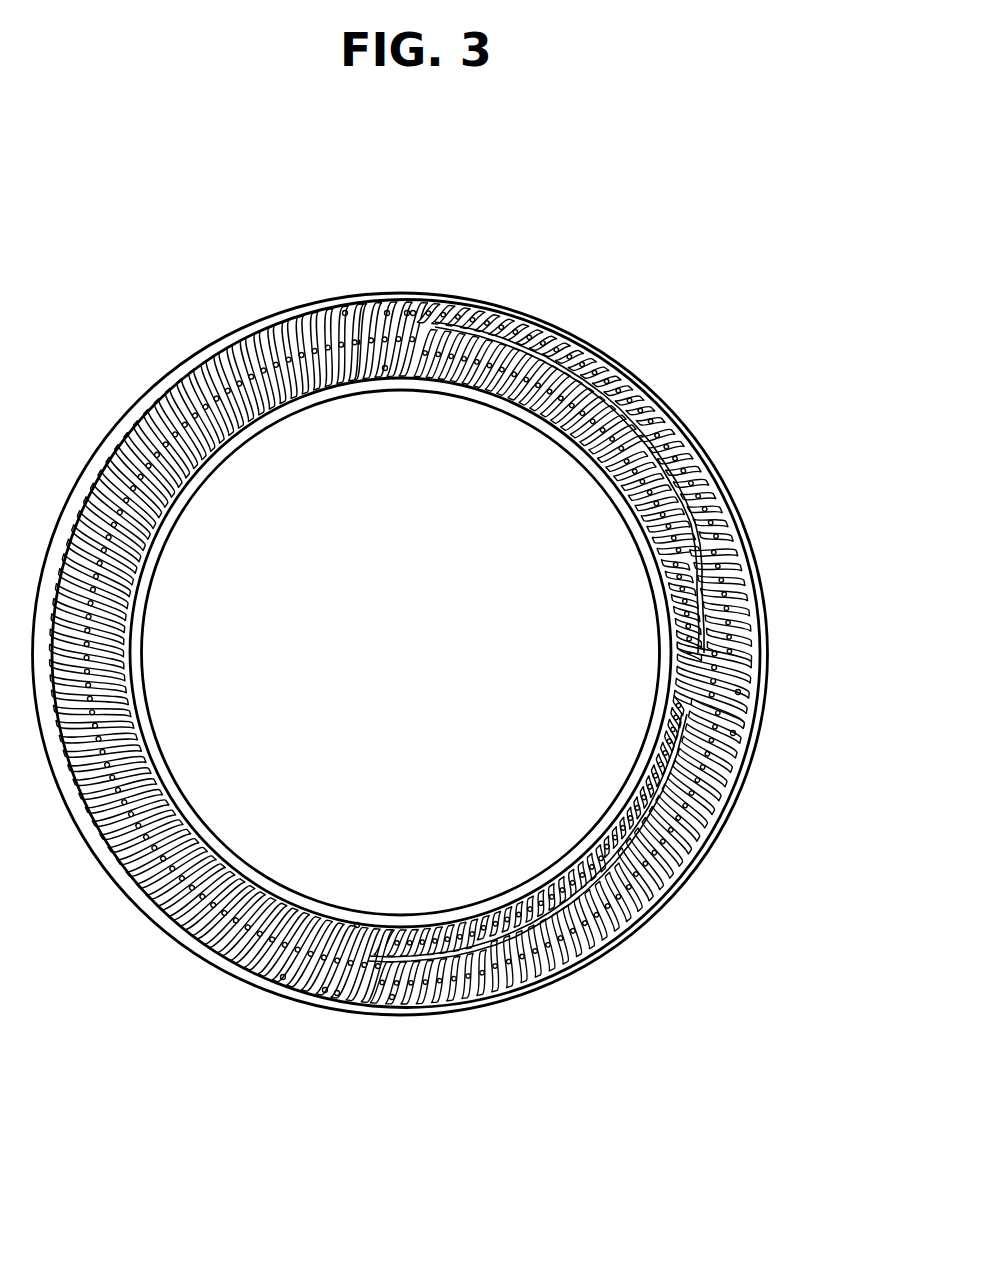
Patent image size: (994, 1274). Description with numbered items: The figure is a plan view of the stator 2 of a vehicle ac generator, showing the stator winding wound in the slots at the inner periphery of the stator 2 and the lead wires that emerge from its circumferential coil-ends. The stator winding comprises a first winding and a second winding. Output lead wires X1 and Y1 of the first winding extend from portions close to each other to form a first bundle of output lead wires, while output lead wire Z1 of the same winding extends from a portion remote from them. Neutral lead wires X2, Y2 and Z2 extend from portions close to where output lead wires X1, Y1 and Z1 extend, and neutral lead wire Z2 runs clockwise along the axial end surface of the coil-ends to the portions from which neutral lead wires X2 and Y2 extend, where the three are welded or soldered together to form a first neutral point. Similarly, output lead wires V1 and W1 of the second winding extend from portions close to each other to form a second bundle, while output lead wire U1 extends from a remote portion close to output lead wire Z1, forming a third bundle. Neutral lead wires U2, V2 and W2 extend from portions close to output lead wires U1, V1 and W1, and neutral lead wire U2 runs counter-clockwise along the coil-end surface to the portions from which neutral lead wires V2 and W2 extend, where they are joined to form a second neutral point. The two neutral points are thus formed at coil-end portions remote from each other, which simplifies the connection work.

The stator 2 is at (724, 317).
The output lead wire W1 is at (345, 312).
The neutral lead wire W2 is at (387, 312).
The output lead wire V1 is at (385, 368).
The neutral lead wire V2 is at (407, 312).
The output lead wire U1 is at (740, 692).
The neutral lead wire U2 is at (413, 312).
The output lead wire X1 is at (283, 977).
The neutral lead wire X2 is at (325, 990).
The output lead wire Y1 is at (357, 925).
The neutral lead wire Y2 is at (337, 993).
The output lead wire Z1 is at (733, 733).
The neutral lead wire Z2 is at (392, 997).